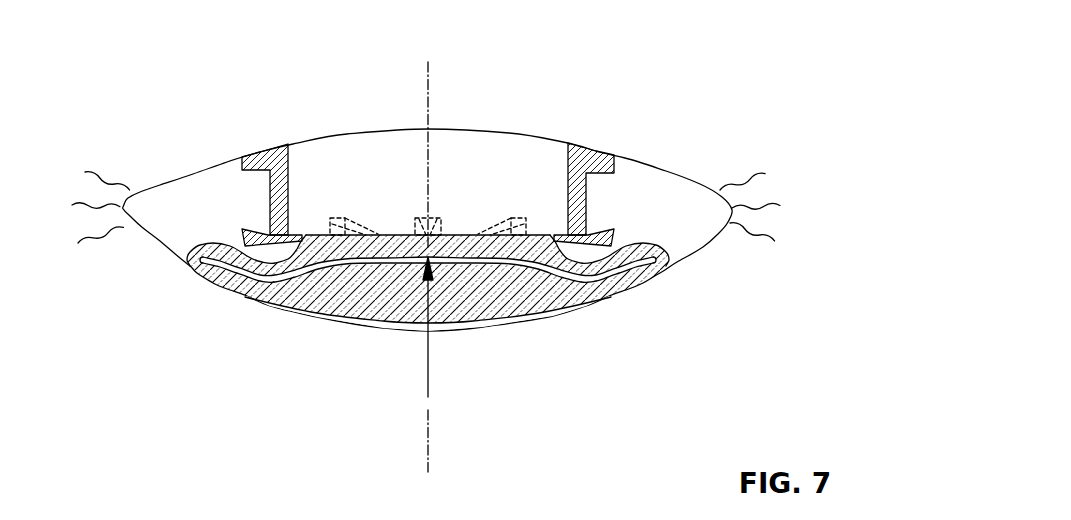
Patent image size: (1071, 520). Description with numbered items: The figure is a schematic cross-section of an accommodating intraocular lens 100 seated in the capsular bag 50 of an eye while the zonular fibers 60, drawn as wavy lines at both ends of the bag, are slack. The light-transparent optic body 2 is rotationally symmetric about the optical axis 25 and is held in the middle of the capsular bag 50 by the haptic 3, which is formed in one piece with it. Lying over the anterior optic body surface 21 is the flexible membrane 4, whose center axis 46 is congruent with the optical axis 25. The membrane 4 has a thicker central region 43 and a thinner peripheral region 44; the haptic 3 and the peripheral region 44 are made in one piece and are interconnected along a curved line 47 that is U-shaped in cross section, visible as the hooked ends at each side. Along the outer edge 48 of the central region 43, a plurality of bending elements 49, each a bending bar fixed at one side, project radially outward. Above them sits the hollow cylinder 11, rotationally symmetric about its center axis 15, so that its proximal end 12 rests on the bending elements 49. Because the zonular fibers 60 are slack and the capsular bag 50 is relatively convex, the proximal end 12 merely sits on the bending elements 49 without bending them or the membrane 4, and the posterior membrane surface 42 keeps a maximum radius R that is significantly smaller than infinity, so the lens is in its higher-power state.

The intraocular lens 100 is at (696, 78).
The optic body 2 is at (323, 297).
The haptic 3 is at (213, 278).
The membrane 4 is at (460, 246).
The hollow cylinder 11 is at (587, 198).
The proximal end 12 is at (253, 217).
The center axis 15 is at (428, 67).
The anterior optic body surface 21 is at (497, 264).
The optical axis 25 is at (427, 441).
The posterior membrane surface 42 is at (524, 260).
The central region 43 is at (375, 200).
The peripheral region 44 is at (180, 222).
The center axis 46 is at (430, 76).
The curved line 47 is at (688, 284).
The outer edge 48 is at (622, 208).
The bending elements 49 is at (243, 230).
The capsular bag 50 is at (142, 240).
The zonular fibers 60 is at (125, 188).
The maximum radius R is at (427, 357).